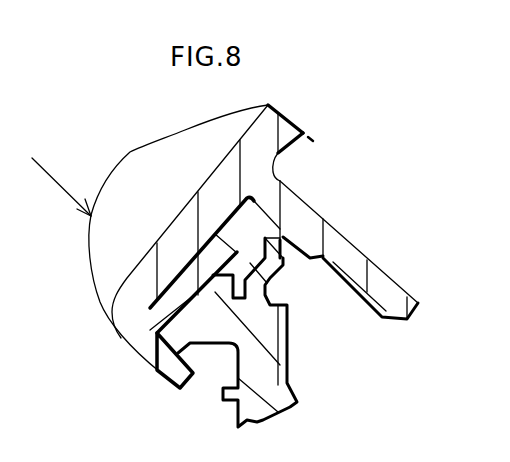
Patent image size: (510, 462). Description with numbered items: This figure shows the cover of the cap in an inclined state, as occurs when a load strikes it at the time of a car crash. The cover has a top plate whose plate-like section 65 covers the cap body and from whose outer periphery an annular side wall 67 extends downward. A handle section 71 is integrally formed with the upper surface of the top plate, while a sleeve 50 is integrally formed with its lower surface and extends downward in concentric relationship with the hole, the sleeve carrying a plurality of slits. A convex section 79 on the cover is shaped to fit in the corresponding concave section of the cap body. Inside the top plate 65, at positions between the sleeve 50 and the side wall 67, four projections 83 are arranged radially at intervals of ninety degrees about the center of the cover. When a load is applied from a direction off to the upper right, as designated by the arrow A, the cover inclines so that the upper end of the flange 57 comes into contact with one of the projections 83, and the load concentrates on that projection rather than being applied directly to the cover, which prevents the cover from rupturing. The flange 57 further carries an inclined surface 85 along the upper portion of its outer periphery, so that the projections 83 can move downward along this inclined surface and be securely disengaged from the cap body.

The arrow A is at (52, 175).
The handle section 71 is at (150, 163).
The plate-like section 65 is at (165, 242).
The convex section 79 is at (293, 254).
The sleeve 50 is at (313, 218).
The flange 57 is at (277, 336).
The projection 83 is at (137, 353).
The inclined surface 85 is at (157, 373).
The side wall 67 is at (193, 325).